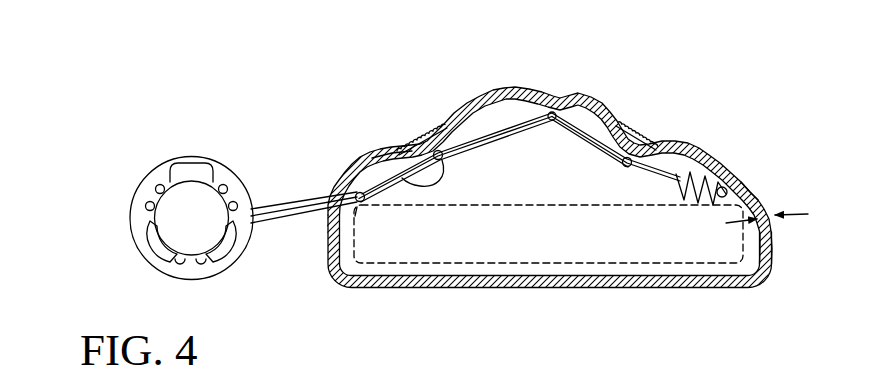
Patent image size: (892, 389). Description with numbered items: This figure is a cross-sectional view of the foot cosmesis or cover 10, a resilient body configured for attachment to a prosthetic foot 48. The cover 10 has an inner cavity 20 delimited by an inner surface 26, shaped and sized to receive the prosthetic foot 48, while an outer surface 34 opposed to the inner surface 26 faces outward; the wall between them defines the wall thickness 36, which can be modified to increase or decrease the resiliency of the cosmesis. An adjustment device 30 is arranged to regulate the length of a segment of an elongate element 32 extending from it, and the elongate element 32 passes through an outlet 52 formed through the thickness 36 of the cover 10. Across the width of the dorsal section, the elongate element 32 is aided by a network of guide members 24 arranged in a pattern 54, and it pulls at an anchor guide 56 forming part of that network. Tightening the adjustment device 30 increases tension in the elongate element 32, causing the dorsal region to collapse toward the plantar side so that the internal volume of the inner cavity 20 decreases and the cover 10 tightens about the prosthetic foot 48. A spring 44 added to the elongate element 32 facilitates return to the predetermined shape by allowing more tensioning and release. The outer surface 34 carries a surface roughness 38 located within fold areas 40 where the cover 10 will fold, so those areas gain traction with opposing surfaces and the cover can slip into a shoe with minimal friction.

The foot cosmesis 10 is at (650, 94).
The inner cavity 20 is at (623, 187).
The guide members 24 is at (388, 150).
The inner surface 26 is at (557, 268).
The adjustment device 30 is at (167, 154).
The elongate element 32 is at (290, 228).
The outer surface 34 is at (581, 94).
The wall thickness 36 is at (779, 212).
The surface roughness 38 is at (443, 128).
The fold areas 40 is at (422, 145).
The spring 44 is at (708, 160).
The prosthetic foot 48 is at (697, 266).
The outlet 52 is at (348, 190).
The pattern 54 is at (502, 128).
The anchor guide 56 is at (753, 192).